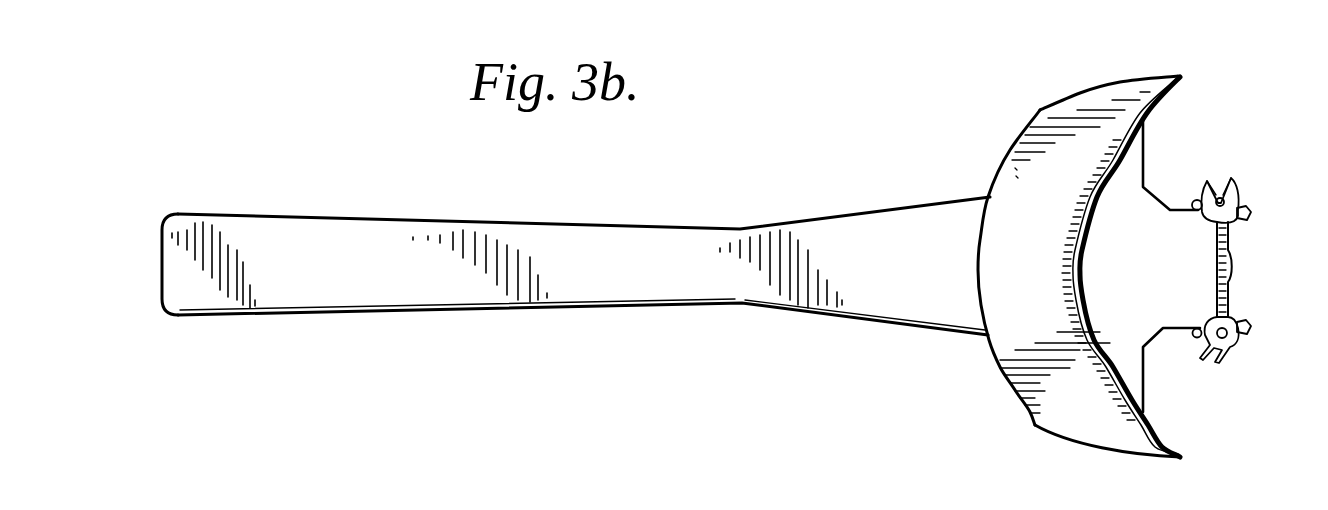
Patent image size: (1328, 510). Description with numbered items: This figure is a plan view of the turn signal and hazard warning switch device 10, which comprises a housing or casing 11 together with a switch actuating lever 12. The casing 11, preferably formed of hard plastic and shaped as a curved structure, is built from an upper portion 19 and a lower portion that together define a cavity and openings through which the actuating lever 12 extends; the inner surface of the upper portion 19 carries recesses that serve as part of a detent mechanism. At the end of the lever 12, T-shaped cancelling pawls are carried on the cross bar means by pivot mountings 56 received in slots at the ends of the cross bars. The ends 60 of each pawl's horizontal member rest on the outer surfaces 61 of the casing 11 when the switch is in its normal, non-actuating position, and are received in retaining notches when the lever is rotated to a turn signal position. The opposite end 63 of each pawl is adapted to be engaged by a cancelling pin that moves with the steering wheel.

The turn signal and hazard warning switch device 10 is at (1178, 63).
The casing 11 is at (1090, 88).
The switch actuating lever 12 is at (806, 312).
The upper portion 19 is at (1010, 158).
The pivot mountings 56 is at (1232, 196).
The ends 60 is at (1197, 200).
The outer surfaces 61 is at (1178, 205).
The opposite end 63 is at (1250, 212).